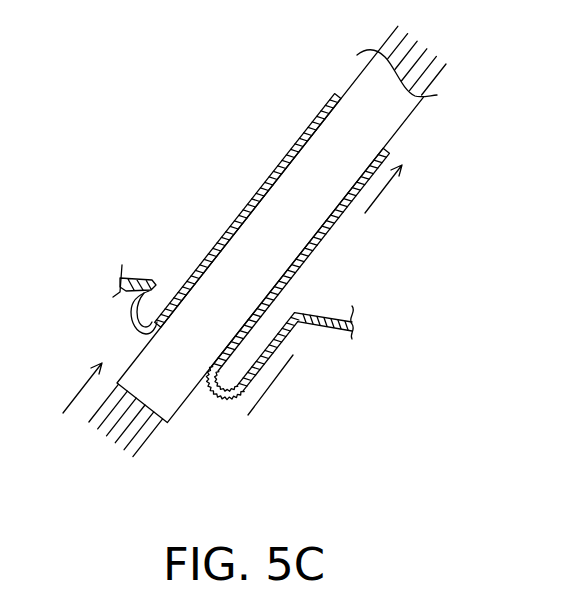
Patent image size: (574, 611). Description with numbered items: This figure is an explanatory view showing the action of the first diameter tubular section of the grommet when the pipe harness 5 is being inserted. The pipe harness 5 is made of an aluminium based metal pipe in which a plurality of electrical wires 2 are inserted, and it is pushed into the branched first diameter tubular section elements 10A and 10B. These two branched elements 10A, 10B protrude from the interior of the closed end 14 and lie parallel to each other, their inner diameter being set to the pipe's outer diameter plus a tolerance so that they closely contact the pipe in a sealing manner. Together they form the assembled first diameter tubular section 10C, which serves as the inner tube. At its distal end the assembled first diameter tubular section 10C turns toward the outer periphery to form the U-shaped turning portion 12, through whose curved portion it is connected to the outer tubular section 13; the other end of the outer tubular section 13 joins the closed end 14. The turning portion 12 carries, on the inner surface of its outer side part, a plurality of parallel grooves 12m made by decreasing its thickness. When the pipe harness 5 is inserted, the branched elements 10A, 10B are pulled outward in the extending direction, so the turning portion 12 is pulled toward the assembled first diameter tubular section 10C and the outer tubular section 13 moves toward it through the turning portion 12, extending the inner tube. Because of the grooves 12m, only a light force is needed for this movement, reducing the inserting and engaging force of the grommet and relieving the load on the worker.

The electrical wires 2 is at (390, 41).
The pipe harness 5 is at (357, 100).
The branched first diameter tubular section element 10A is at (227, 211).
The branched first diameter tubular section element 10B is at (300, 136).
The assembled first diameter tubular section 10C is at (178, 285).
The turning portion 12 is at (293, 309).
The grooves 12m is at (229, 362).
The outer tubular section 13 is at (282, 340).
The closed end 14 is at (324, 327).